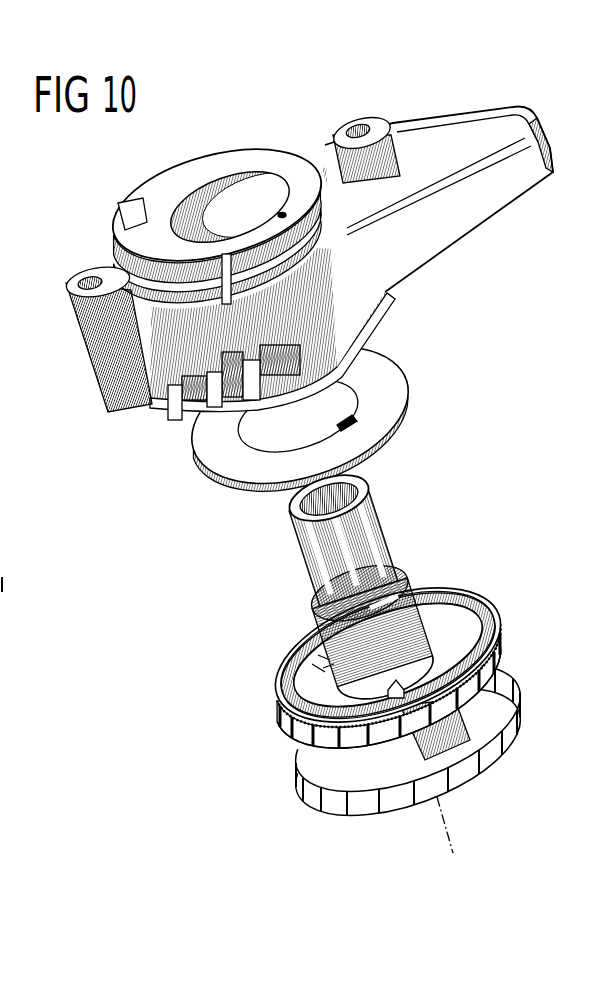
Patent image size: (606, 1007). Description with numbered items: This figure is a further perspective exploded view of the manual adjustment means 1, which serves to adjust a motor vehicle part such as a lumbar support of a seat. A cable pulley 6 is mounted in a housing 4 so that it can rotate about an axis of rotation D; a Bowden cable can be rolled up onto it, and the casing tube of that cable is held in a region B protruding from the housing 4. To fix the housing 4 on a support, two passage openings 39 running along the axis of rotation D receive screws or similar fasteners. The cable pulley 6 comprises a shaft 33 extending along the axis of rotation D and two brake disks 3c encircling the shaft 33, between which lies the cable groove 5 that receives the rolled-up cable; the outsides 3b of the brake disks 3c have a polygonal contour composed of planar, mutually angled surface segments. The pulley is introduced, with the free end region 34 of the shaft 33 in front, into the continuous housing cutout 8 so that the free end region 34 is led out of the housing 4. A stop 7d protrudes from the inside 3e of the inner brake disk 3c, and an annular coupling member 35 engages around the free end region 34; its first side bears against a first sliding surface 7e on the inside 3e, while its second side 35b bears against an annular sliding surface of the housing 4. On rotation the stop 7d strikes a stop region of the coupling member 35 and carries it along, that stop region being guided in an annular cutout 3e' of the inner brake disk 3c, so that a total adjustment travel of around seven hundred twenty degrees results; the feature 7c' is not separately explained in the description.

The axis of rotation D is at (225, 223).
The housing cutout 8 is at (255, 200).
The passage openings 39 is at (357, 128).
The region of the housing B is at (477, 202).
The manual adjustment means 1 is at (551, 297).
The housing 4 is at (103, 401).
The second side of the coupling member 35b is at (213, 442).
The coupling member 35 is at (259, 441).
The free end region of the shaft 34 is at (352, 582).
The shaft 33 is at (381, 699).
The bearing surface 7c' is at (419, 631).
The brake disks 3c is at (453, 636).
The cable groove 5 is at (497, 697).
The cutout 3e' is at (328, 624).
The inside of the brake disk 3e is at (293, 636).
The cable pulley 6 is at (377, 668).
The first sliding surface 7e is at (290, 693).
The stop 7d is at (297, 730).
The outsides of the brake disks 3b is at (342, 732).